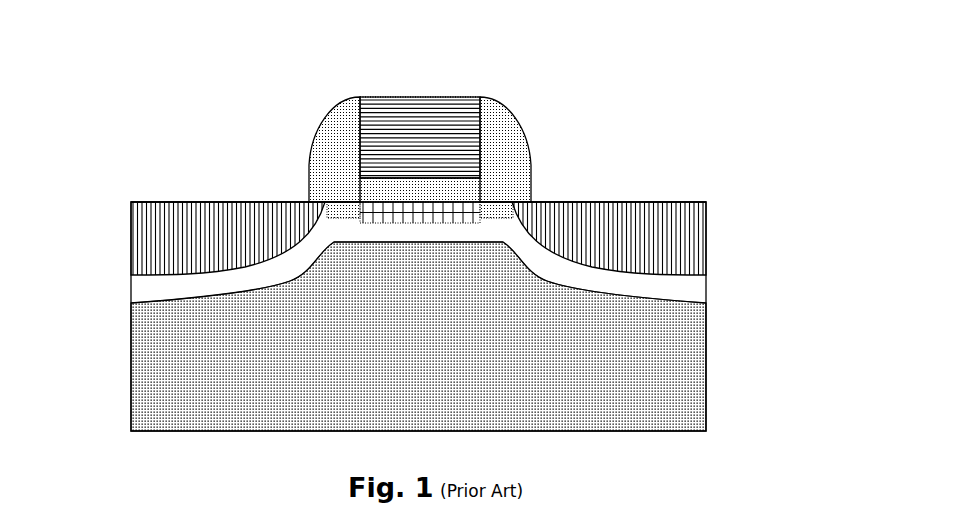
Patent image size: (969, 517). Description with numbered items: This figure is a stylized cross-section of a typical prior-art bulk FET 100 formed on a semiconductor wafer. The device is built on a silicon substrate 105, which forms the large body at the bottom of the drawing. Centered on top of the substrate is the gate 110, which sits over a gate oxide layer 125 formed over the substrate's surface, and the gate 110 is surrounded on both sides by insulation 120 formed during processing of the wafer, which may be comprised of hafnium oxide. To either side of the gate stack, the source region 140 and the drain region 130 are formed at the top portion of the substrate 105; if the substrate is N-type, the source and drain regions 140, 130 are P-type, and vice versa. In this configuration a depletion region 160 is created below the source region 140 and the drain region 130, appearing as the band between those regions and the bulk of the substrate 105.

The bulk FET 100 is at (374, 222).
The silicon substrate 105 is at (160, 383).
The gate 110 is at (437, 104).
The insulation 120 is at (510, 130).
The gate oxide layer 125 is at (353, 187).
The drain region 130 is at (590, 213).
The source region 140 is at (152, 212).
The depletion region 160 is at (172, 289).